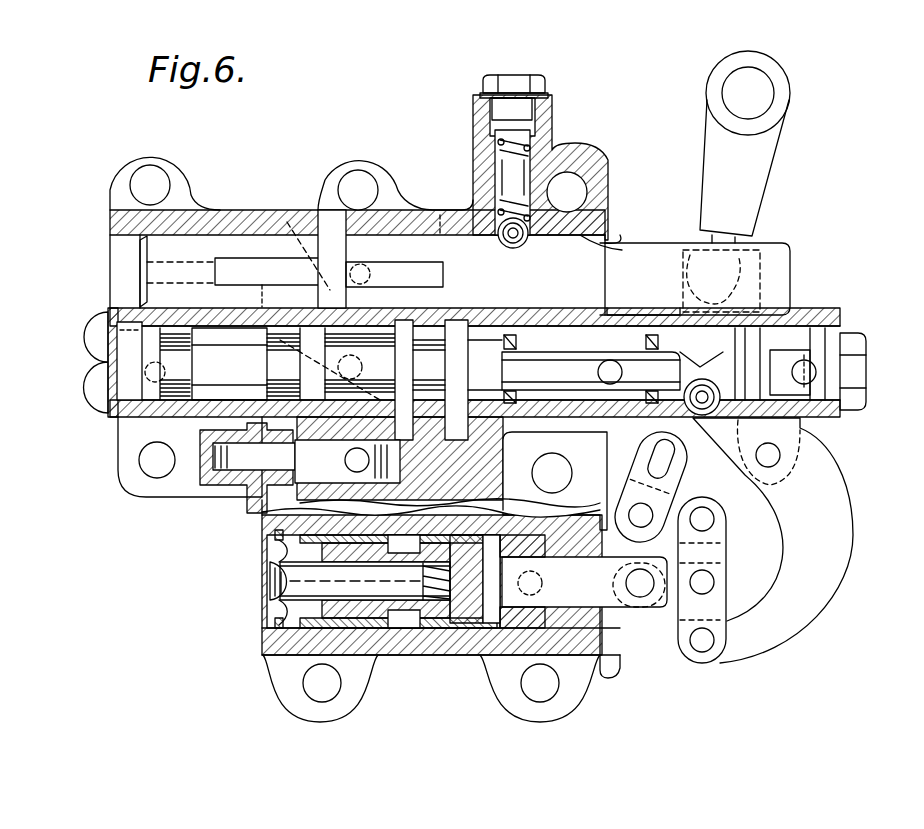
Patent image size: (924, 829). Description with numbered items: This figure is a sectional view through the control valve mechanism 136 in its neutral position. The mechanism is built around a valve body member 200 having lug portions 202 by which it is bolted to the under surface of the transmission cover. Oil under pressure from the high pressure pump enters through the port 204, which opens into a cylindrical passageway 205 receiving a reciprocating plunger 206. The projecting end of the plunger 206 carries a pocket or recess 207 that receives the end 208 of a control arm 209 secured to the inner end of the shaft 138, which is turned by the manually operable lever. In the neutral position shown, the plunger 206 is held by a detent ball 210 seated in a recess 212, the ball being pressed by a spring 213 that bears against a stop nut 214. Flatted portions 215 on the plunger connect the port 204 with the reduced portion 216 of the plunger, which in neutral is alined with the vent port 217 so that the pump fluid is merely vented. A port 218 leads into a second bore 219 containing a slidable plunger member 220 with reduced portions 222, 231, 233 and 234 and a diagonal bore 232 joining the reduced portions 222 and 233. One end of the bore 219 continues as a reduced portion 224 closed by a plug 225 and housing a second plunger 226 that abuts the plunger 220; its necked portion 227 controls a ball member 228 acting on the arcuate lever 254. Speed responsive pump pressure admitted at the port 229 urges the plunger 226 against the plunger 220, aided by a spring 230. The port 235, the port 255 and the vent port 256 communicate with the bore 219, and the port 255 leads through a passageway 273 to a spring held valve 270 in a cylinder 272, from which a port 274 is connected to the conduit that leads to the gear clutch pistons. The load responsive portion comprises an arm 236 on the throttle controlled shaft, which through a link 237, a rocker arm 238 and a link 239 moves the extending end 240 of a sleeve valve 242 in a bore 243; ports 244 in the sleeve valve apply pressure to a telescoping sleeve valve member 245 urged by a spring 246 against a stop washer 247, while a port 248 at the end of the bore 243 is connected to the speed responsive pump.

The control valve mechanism 136 is at (247, 188).
The shaft 138 is at (760, 88).
The valve body member 200 is at (604, 650).
The lug portions 202 is at (158, 178).
The port 204 is at (283, 222).
The cylindrical passageway 205 is at (120, 247).
The plunger 206 is at (628, 250).
The pocket or recess 207 is at (752, 247).
The end of control arm 208 is at (752, 280).
The control arm 209 is at (763, 156).
The detent ball 210 is at (505, 248).
The recess 212 is at (520, 250).
The spring 213 is at (543, 133).
The stop nut 214 is at (517, 83).
The flatted portions 215 is at (440, 278).
The reduced portion 216 is at (330, 245).
The vent port 217 is at (336, 217).
The port 218 is at (216, 310).
The second bore 219 is at (200, 410).
The plunger member 220 is at (120, 416).
The reduced portion 222 is at (245, 374).
The reduced portion of bore 224 is at (803, 350).
The plug 225 is at (855, 381).
The second plunger 226 is at (578, 379).
The necked portion 227 is at (700, 365).
The ball member 228 is at (622, 372).
The port 229 is at (810, 367).
The spring 230 is at (640, 318).
The reduced portion 231 is at (468, 435).
The angularly extending bore 232 is at (333, 402).
The second reduced portion 233 is at (405, 405).
The intermediate reduced portion 234 is at (397, 315).
The port 235 is at (452, 322).
The arm 236 is at (650, 470).
The link 237 is at (678, 500).
The rocker arm 238 is at (720, 613).
The link 239 is at (680, 625).
The extending end 240 is at (665, 612).
The sleeve valve 242 is at (413, 640).
The bore 243 is at (275, 546).
The ports 244 is at (520, 547).
The telescoping sleeve valve member 245 is at (455, 648).
The spring 246 is at (270, 607).
The stop washer 247 is at (268, 562).
The port 248 is at (548, 562).
The arcuate lever 254 is at (833, 505).
The port 255 is at (492, 316).
The vent port 256 is at (268, 310).
The valve 270 is at (340, 483).
The cylinder 272 is at (260, 504).
The passageway 273 is at (480, 457).
The port 274 is at (352, 460).